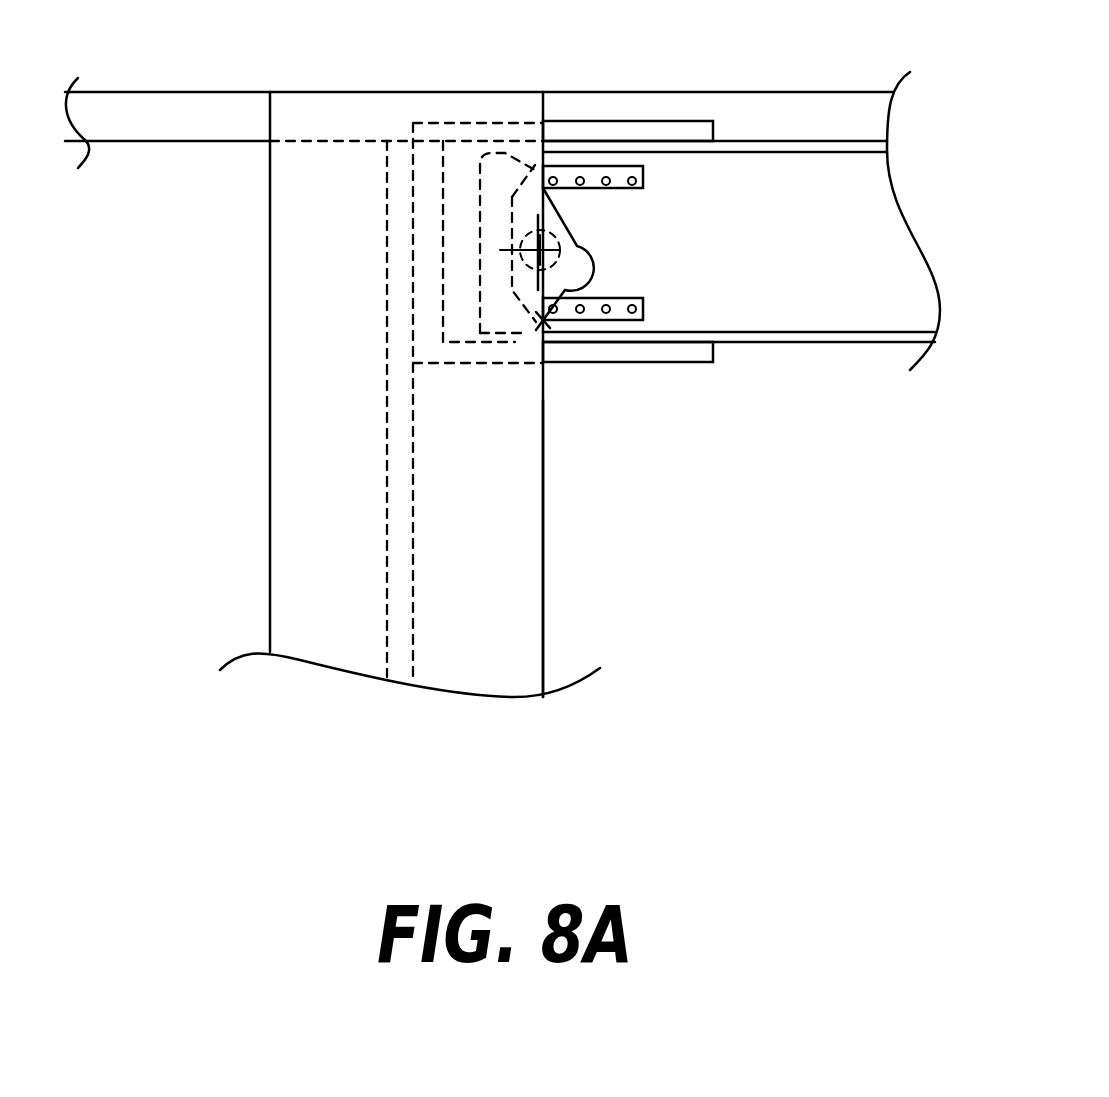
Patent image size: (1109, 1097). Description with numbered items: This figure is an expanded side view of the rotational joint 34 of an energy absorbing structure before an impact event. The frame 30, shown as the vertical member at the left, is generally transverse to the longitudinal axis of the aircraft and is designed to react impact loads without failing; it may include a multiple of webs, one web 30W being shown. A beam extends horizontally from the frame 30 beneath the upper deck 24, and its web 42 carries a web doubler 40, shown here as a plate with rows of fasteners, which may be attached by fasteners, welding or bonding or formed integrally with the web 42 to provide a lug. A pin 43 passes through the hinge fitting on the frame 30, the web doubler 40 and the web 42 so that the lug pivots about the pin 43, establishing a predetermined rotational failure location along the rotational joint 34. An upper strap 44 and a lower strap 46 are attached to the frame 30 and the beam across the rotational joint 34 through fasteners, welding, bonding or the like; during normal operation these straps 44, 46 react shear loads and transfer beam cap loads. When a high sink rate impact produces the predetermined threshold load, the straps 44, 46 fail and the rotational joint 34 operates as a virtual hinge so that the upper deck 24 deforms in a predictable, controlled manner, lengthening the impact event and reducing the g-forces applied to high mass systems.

The upper deck 24 is at (810, 90).
The web 42 is at (872, 257).
The frame 30 is at (312, 578).
The web 30W is at (517, 612).
The upper strap 44 is at (633, 110).
The lower strap 46 is at (630, 363).
The web doubler 40 is at (643, 301).
The rotational joint 34 is at (575, 255).
The pin 43 is at (545, 318).